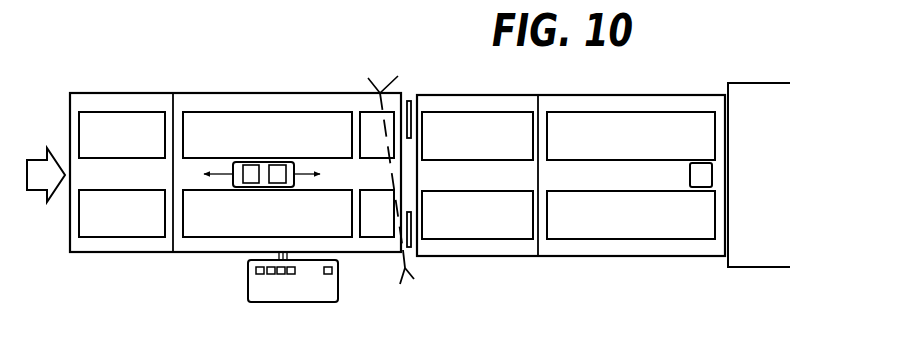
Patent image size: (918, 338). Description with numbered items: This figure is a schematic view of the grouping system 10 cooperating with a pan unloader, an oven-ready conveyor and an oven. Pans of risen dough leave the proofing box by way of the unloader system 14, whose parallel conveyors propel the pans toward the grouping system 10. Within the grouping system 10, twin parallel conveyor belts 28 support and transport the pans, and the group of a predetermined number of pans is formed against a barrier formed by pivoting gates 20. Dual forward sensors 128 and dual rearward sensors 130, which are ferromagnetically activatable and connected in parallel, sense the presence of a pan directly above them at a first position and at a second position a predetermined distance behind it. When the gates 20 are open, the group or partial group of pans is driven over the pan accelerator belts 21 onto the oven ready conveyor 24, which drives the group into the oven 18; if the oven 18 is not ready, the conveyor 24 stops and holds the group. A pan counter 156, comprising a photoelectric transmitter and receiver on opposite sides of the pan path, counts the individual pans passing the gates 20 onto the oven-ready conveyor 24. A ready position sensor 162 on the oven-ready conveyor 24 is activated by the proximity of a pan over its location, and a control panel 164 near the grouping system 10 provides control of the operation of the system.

The grouping system 10 is at (308, 92).
The unloader system 14 is at (115, 92).
The oven 18 is at (750, 83).
The pivoting gates 20 is at (412, 101).
The pan accelerator belts 21 is at (370, 122).
The oven ready conveyor 24 is at (536, 94).
The twin parallel conveyor belts 28 is at (213, 147).
The dual forward sensors 128 is at (285, 162).
The dual rearward sensors 130 is at (258, 161).
The pan counter 156 is at (390, 77).
The ready position sensor 162 is at (691, 168).
The control panel 164 is at (248, 286).